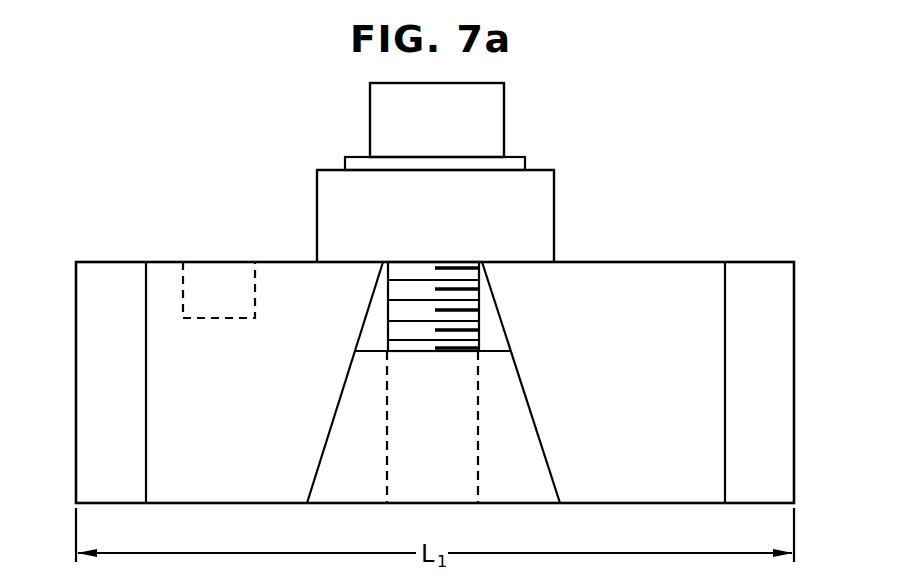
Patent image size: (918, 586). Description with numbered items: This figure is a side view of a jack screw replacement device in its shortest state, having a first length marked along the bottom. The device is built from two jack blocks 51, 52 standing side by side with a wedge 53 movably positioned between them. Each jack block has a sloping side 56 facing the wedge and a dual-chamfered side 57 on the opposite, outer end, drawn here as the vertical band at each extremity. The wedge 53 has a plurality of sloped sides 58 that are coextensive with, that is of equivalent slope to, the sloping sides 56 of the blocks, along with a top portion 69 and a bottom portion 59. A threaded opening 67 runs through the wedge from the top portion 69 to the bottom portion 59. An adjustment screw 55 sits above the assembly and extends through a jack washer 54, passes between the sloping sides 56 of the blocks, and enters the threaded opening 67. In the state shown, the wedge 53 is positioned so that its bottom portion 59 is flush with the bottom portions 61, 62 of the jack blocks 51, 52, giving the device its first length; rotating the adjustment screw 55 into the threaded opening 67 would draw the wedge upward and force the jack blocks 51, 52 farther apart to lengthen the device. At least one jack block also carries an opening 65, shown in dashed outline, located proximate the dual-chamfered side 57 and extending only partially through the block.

The jack block 51 is at (254, 382).
The jack block 52 is at (636, 381).
The wedge 53 is at (378, 417).
The jack washer 54 is at (554, 203).
The adjustment screw 55 is at (504, 123).
The sloping side 56 is at (362, 314).
The dual-chamfered side 57 is at (86, 424).
The sloped side 58 is at (320, 458).
The bottom portion 59 is at (490, 505).
The bottom portion 61 is at (183, 505).
The bottom portion 62 is at (625, 505).
The opening 65 is at (206, 275).
The threaded opening 67 is at (411, 505).
The top portion 69 is at (500, 352).